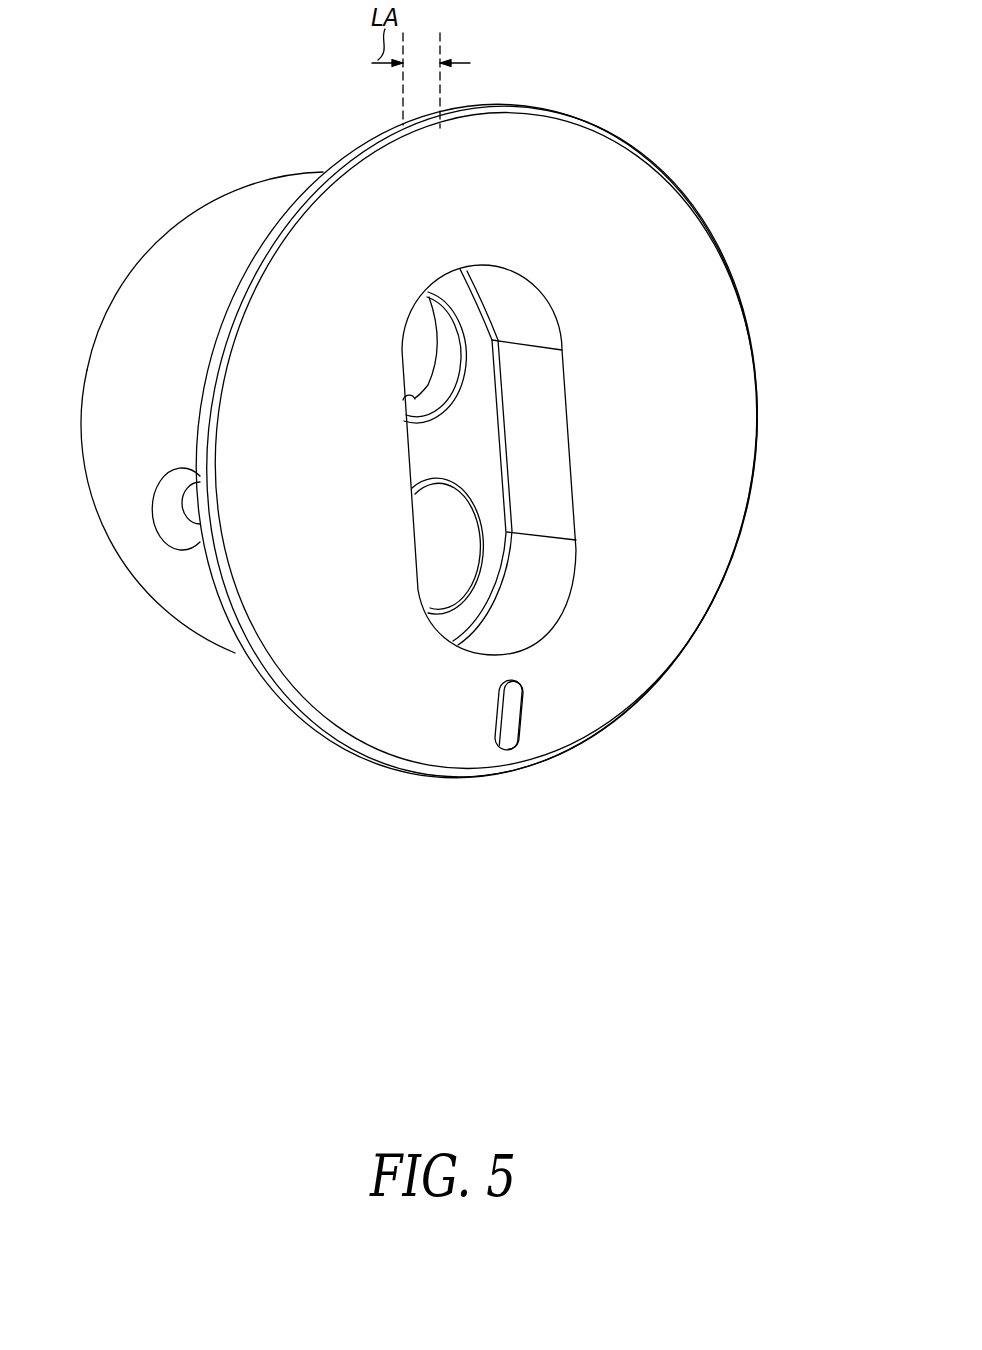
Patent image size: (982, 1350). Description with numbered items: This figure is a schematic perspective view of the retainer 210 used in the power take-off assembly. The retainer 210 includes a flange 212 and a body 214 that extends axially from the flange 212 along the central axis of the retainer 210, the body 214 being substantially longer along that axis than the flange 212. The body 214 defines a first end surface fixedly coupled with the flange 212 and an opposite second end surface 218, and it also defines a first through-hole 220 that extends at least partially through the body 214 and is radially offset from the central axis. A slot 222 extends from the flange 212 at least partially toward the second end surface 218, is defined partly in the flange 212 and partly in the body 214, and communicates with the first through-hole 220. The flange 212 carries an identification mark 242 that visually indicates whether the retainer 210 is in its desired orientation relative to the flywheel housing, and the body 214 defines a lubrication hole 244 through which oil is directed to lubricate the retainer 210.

The retainer 210 is at (722, 58).
The flange 212 is at (713, 448).
The body 214 is at (208, 253).
The second end surface 218 is at (88, 372).
The first through-hole 220 is at (443, 567).
The slot 222 is at (542, 419).
The identification mark 242 is at (507, 723).
The lubrication hole 244 is at (180, 513).